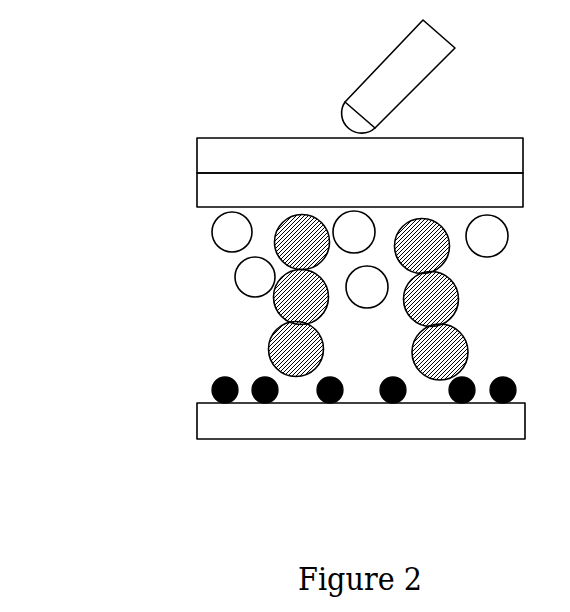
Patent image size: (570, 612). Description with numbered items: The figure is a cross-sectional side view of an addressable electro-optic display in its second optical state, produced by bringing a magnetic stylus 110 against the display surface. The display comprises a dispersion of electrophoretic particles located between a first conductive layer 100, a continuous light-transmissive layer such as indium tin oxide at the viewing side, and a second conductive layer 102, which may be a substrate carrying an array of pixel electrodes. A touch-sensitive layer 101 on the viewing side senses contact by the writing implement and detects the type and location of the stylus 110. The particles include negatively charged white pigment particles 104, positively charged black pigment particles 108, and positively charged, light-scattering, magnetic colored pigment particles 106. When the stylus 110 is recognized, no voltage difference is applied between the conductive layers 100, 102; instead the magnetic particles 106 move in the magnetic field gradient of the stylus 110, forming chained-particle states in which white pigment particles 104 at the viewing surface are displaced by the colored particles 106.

The first conductive layer 100 is at (300, 218).
The touch-sensitive layer 101 is at (288, 153).
The second conductive layer 102 is at (301, 456).
The white pigment particles 104 is at (301, 262).
The magnetic colored pigment particles 106 is at (301, 298).
The black pigment particles 108 is at (294, 384).
The magnetic stylus 110 is at (336, 76).